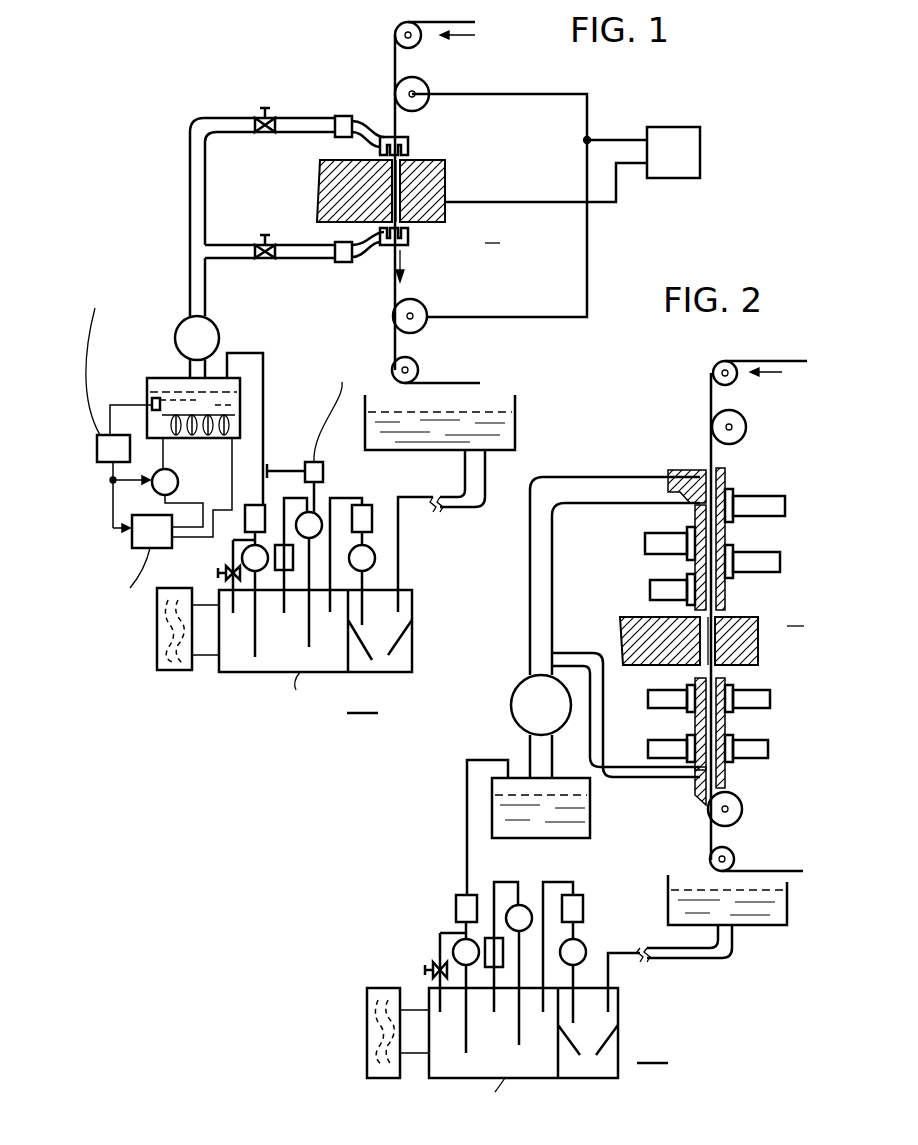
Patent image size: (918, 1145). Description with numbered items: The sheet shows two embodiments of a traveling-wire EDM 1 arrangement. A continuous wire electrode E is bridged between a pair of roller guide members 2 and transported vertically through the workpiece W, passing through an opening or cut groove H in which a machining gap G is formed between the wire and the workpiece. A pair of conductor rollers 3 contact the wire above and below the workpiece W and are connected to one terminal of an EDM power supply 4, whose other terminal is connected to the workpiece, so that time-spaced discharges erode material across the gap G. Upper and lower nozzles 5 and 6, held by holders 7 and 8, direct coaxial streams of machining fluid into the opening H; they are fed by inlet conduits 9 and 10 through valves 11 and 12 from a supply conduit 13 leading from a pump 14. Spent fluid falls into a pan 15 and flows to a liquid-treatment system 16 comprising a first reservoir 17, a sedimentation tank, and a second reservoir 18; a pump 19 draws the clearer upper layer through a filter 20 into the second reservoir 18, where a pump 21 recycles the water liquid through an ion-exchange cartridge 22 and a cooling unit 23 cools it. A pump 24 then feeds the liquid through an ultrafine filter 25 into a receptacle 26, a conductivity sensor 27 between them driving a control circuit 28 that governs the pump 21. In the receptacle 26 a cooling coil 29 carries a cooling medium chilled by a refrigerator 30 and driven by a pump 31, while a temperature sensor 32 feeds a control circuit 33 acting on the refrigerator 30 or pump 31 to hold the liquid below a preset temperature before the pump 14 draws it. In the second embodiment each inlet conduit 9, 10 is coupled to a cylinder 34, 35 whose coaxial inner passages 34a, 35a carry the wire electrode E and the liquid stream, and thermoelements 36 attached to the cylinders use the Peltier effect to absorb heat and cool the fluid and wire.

In FIG. 1, the traveling-wire EDM arrangement 1 is at (493, 230).
In FIG. 2, the traveling-wire EDM arrangement 1 is at (795, 613).
In FIG. 1, the guide members 2 is at (395, 30).
In FIG. 2, the guide members 2 is at (712, 368).
In FIG. 1, the conductor rollers 3 is at (427, 83).
In FIG. 2, the conductor rollers 3 is at (746, 427).
In FIG. 1, the EDM power supply 4 is at (672, 200).
In FIG. 1, the upper nozzle 5 is at (408, 145).
In FIG. 1, the lower nozzle 6 is at (410, 242).
In FIG. 1, the holder 7 is at (343, 116).
In FIG. 1, the holder 8 is at (343, 262).
In FIG. 1, the inlet conduit 9 is at (305, 118).
In FIG. 2, the inlet conduit 9 is at (598, 477).
In FIG. 1, the inlet conduit 10 is at (298, 258).
In FIG. 2, the inlet conduit 10 is at (675, 778).
In FIG. 1, the valve 11 is at (265, 106).
In FIG. 1, the valve 12 is at (265, 233).
In FIG. 1, the supply conduit 13 is at (206, 284).
In FIG. 1, the pump 14 is at (176, 330).
In FIG. 2, the pump 14 is at (511, 700).
In FIG. 1, the pan 15 is at (516, 412).
In FIG. 2, the pan 15 is at (770, 925).
In FIG. 1, the liquid-treatment system 16 is at (362, 700).
In FIG. 2, the liquid-treatment system 16 is at (652, 1050).
In FIG. 1, the first reservoir 17 is at (413, 600).
In FIG. 2, the first reservoir 17 is at (619, 1000).
In FIG. 1, the second reservoir 18 is at (290, 692).
In FIG. 2, the second reservoir 18 is at (481, 1095).
In FIG. 1, the pump 19 is at (376, 556).
In FIG. 2, the pump 19 is at (587, 948).
In FIG. 1, the filter 20 is at (364, 505).
In FIG. 2, the filter 20 is at (584, 898).
In FIG. 1, the pump 21 is at (312, 595).
In FIG. 2, the pump 21 is at (526, 935).
In FIG. 1, the ion-exchange cartridge 22 is at (284, 595).
In FIG. 2, the ion-exchange cartridge 22 is at (489, 990).
In FIG. 1, the cooling unit 23 is at (175, 670).
In FIG. 2, the cooling unit 23 is at (367, 995).
In FIG. 1, the pump 24 is at (231, 545).
In FIG. 2, the pump 24 is at (440, 945).
In FIG. 1, the ultrafine filter 25 is at (247, 505).
In FIG. 2, the ultrafine filter 25 is at (456, 902).
In FIG. 1, the receptacle 26 is at (152, 378).
In FIG. 2, the receptacle 26 is at (591, 822).
In FIG. 1, the conductivity detecting sensor 27 is at (270, 468).
In FIG. 1, the control circuit 28 is at (345, 452).
In FIG. 1, the cooling coil 29 is at (240, 428).
In FIG. 1, the refrigerator 30 is at (138, 548).
In FIG. 1, the pump 31 is at (178, 482).
In FIG. 1, the temperature sensor 32 is at (150, 402).
In FIG. 1, the control circuit 33 is at (105, 463).
In FIG. 2, the cylinder 34 is at (726, 482).
In FIG. 2, the cylindrical inner passage 34a is at (708, 542).
In FIG. 2, the cylinder 35 is at (690, 718).
In FIG. 2, the cylindrical inner passage 35a is at (722, 722).
In FIG. 2, the thermoelements 36 is at (780, 562).
In FIG. 1, the wire electrode E is at (470, 22).
In FIG. 2, the wire electrode E is at (802, 361).
In FIG. 1, the machining gap G is at (330, 188).
In FIG. 1, the opening H is at (398, 165).
In FIG. 2, the opening H is at (718, 618).
In FIG. 1, the workpiece W is at (446, 192).
In FIG. 2, the workpiece W is at (759, 645).